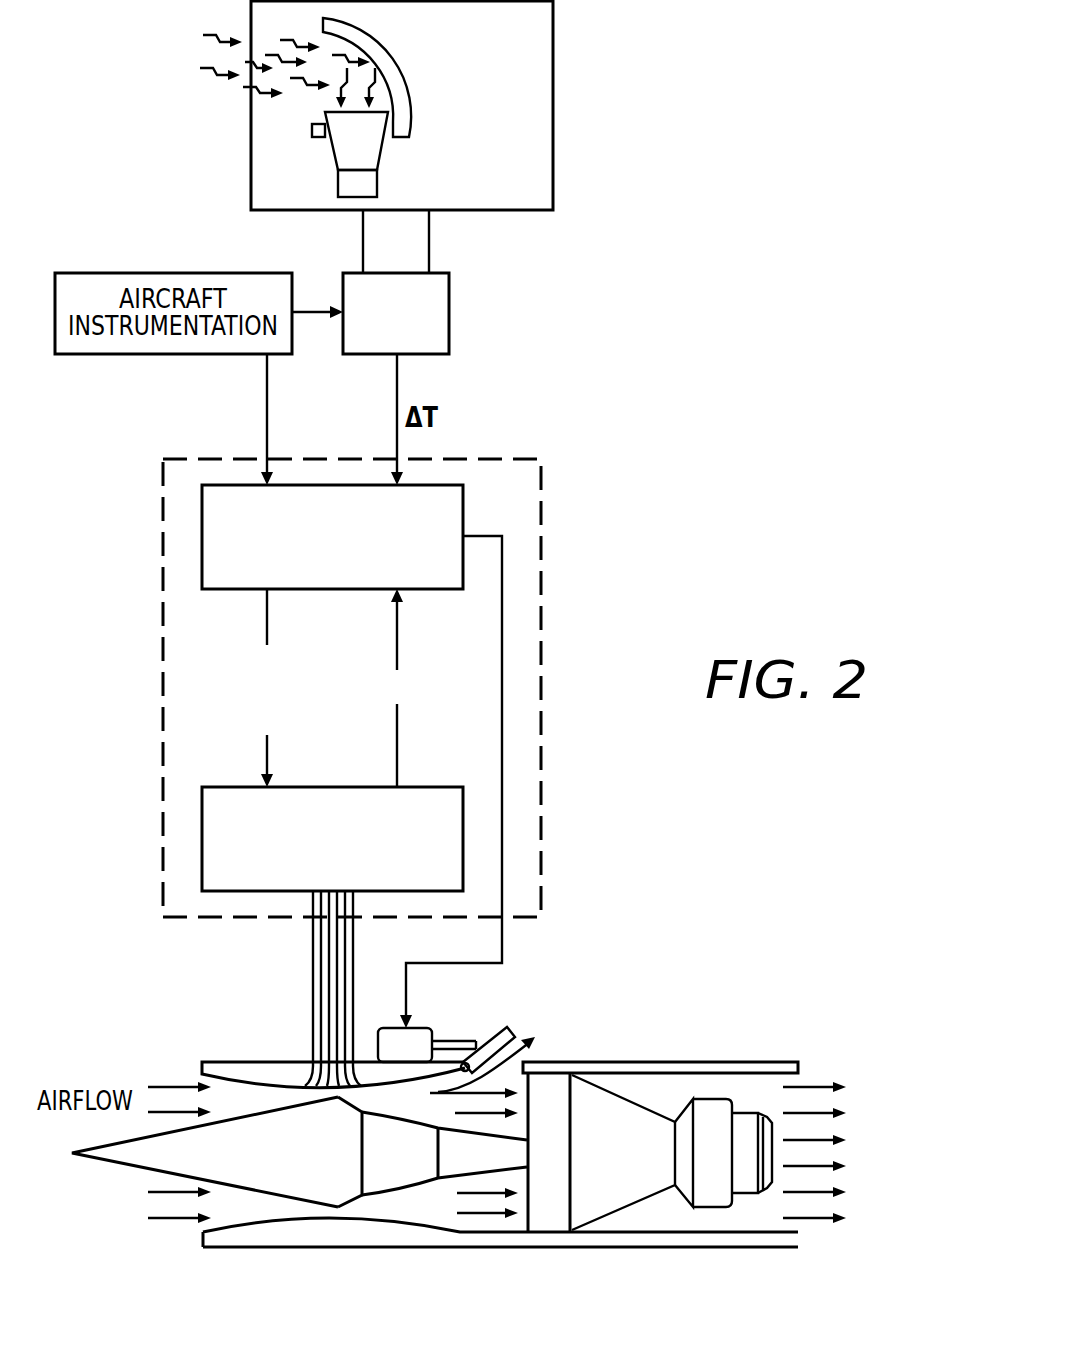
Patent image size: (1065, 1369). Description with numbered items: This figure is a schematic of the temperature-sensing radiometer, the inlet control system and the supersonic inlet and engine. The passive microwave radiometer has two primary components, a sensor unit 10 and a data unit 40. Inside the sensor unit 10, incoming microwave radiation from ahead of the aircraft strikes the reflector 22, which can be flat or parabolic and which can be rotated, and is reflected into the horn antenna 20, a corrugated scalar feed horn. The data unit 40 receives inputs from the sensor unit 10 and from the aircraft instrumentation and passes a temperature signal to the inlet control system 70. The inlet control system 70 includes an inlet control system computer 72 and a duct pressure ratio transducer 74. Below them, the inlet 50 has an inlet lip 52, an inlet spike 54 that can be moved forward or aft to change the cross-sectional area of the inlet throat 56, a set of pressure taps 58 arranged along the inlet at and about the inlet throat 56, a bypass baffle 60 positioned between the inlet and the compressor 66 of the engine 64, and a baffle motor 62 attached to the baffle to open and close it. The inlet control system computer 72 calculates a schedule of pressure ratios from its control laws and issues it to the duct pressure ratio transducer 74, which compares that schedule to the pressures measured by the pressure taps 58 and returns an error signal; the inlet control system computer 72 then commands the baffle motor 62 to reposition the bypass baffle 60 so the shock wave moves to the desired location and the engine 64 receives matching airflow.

The sensor unit 10 is at (537, 27).
The horn antenna 20 is at (347, 157).
The reflector 22 is at (365, 43).
The data unit 40 is at (440, 285).
The inlet 50 is at (260, 1248).
The inlet lip 52 is at (202, 1068).
The inlet spike 54 is at (290, 1161).
The inlet throat 56 is at (338, 1097).
The pressure taps 58 is at (303, 1074).
The bypass baffle 60 is at (503, 1030).
The baffle motor 62 is at (393, 1047).
The engine 64 is at (635, 1159).
The compressor 66 is at (515, 1220).
The inlet control system 70 is at (543, 472).
The inlet control system computer 72 is at (452, 506).
The duct pressure ratio transducer 74 is at (452, 810).